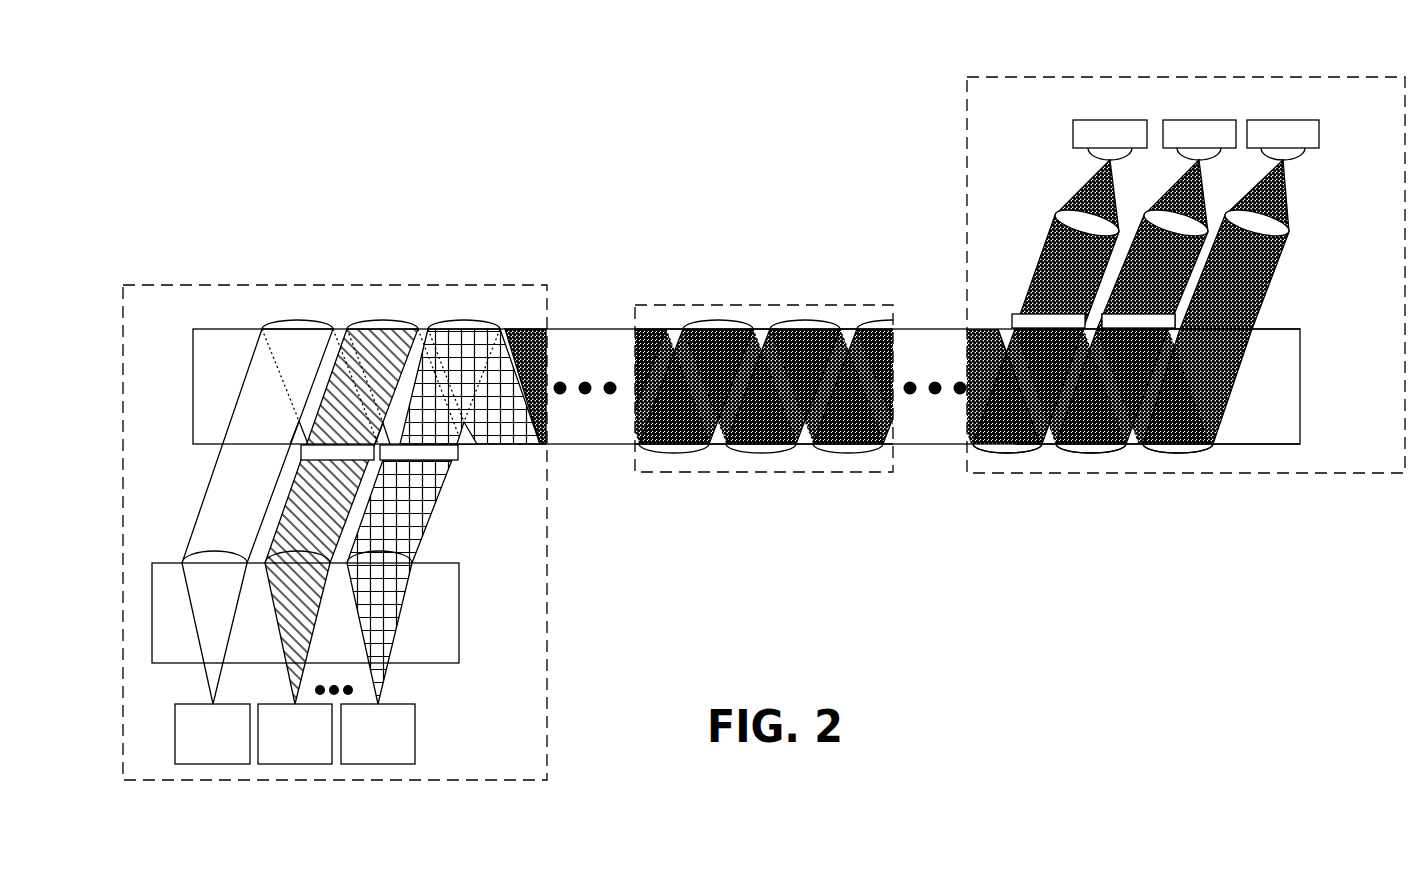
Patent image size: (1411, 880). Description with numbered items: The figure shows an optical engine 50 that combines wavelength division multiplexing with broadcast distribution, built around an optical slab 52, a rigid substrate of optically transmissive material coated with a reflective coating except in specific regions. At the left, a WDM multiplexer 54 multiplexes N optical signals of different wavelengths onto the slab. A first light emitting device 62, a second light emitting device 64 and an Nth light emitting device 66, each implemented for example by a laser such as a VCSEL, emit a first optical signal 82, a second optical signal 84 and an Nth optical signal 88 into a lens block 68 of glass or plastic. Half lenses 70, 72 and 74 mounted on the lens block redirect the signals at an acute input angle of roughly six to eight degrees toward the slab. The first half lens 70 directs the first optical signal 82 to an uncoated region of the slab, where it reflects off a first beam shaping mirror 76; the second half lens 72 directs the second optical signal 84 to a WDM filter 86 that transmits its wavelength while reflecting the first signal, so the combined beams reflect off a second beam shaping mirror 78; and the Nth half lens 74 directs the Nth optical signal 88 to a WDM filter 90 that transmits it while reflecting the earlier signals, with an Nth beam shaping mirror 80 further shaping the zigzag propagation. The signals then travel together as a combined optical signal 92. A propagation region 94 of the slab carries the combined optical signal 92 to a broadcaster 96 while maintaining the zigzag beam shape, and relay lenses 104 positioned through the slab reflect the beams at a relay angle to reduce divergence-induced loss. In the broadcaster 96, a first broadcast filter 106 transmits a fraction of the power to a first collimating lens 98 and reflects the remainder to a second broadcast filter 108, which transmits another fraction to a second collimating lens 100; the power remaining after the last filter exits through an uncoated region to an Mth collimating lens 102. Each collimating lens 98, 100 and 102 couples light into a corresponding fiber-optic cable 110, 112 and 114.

The optical engine 50 is at (504, 152).
The optical slab 52 is at (620, 329).
The WDM multiplexer 54 is at (145, 282).
The first light emitting device 62 is at (210, 764).
The second light emitting device 64 is at (296, 764).
The Nth light emitting device 66 is at (380, 764).
The lens block 68 is at (459, 663).
The first half lens 70 is at (207, 550).
The second half lens 72 is at (277, 550).
The Nth half lens 74 is at (375, 547).
The first beam shaping mirror 76 is at (272, 326).
The second beam shaping mirror 78 is at (365, 326).
The Nth beam shaping mirror 80 is at (462, 326).
The first optical signal 82 is at (212, 480).
The second optical signal 84 is at (357, 497).
The WDM filter 86 is at (347, 462).
The Nth optical signal 88 is at (422, 540).
The WDM filter 90 is at (458, 457).
The combined optical signal 92 is at (510, 330).
The propagation region 94 is at (660, 300).
The broadcaster 96 is at (965, 167).
The first collimating lens 98 is at (1055, 215).
The second collimating lens 100 is at (1173, 233).
The Mth collimating lens 102 is at (1290, 234).
The relay lenses 104 is at (803, 326).
The first broadcast filter 106 is at (1013, 320).
The second broadcast filter 108 is at (1162, 330).
The fiber-optic cable 110 is at (1103, 120).
The fiber-optic cable 112 is at (1177, 120).
The fiber-optic cable 114 is at (1268, 120).